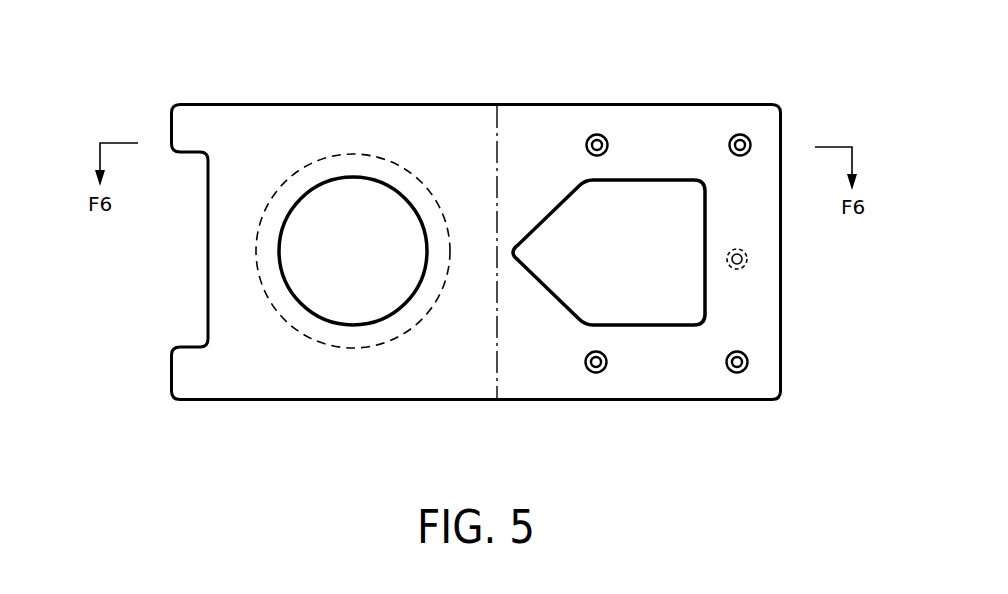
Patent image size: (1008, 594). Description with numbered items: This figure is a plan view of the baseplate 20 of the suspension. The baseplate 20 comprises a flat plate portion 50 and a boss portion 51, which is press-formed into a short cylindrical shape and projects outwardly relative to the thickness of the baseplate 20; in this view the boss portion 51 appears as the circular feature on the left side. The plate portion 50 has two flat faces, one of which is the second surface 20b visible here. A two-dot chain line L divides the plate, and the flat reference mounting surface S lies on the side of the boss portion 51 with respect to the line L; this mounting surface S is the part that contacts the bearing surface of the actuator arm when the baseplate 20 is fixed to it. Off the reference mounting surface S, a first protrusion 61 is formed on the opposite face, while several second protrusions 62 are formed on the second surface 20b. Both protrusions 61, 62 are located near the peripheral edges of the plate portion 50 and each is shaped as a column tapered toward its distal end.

The baseplate 20 is at (468, 100).
The second surface 20b is at (675, 127).
The plate portion 50 is at (430, 381).
The boss portion 51 is at (358, 153).
The reference mounting surface S is at (412, 121).
The two-dot chain line L is at (499, 184).
The first protrusion 61 is at (748, 262).
The second protrusions 62 is at (597, 134).